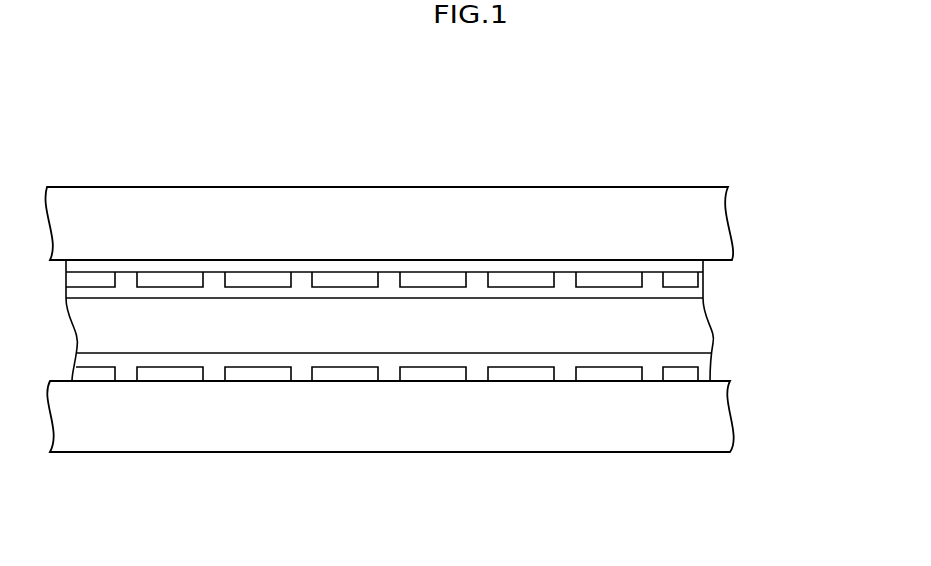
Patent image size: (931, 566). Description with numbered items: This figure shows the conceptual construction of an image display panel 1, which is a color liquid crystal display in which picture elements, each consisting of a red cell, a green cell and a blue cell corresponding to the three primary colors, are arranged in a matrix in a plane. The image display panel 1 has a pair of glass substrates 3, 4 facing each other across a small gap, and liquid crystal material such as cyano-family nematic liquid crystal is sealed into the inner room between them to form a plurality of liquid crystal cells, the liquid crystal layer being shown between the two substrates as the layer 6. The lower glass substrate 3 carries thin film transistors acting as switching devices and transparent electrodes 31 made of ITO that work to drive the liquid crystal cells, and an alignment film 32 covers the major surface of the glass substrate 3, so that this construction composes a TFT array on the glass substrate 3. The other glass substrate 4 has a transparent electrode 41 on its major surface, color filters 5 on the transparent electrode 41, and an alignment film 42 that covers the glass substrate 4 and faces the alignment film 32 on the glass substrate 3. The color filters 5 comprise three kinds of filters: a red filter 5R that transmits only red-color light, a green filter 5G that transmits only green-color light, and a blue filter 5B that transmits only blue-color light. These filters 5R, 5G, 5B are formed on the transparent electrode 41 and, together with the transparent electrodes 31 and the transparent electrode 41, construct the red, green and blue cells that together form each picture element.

The image display panel 1 is at (710, 155).
The glass substrate 3 is at (730, 412).
The transparent electrodes 31 is at (170, 373).
The alignment film 32 is at (693, 358).
The glass substrate 4 is at (731, 221).
The transparent electrode 41 is at (695, 263).
The alignment film 42 is at (690, 293).
The color filters 5 is at (363, 132).
The red filter 5R is at (167, 280).
The green filter 5G is at (255, 280).
The blue filter 5B is at (344, 280).
The liquid crystal layer 6 is at (685, 328).